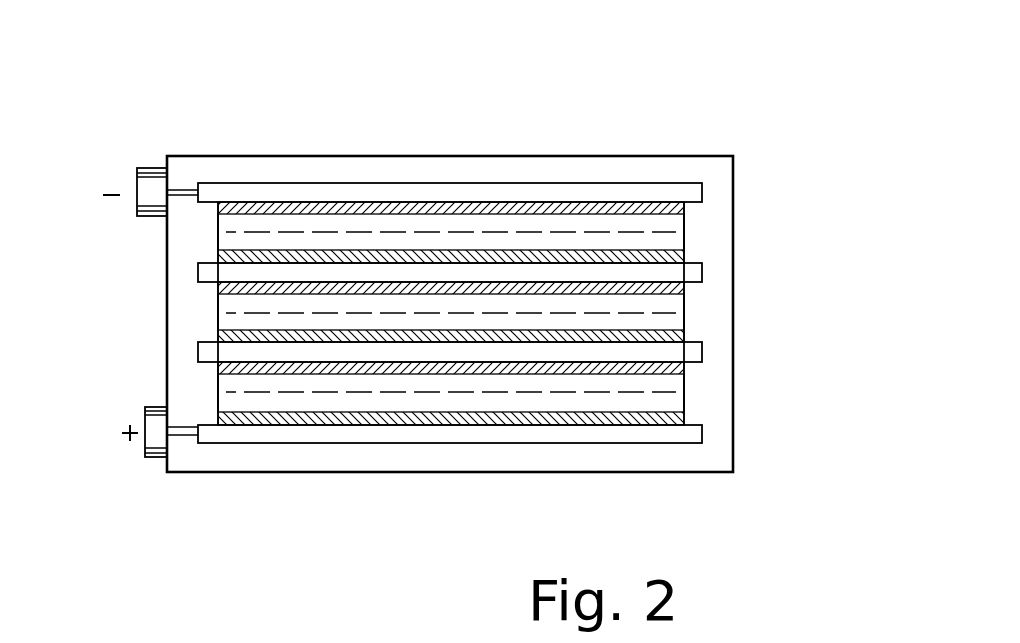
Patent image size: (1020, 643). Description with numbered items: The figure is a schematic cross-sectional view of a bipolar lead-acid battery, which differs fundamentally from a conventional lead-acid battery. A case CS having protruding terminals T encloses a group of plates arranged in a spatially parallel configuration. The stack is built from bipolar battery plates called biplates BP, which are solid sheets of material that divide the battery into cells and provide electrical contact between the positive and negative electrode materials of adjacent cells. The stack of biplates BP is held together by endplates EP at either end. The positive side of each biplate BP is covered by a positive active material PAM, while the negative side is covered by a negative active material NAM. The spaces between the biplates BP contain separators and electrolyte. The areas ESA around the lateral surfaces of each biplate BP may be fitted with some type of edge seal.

The terminal T is at (146, 167).
The positive active material PAM is at (305, 254).
The negative active material NAM is at (378, 201).
The endplate EP is at (509, 184).
The case CS is at (718, 242).
The biplate BP is at (702, 273).
The edge seal area ESA is at (128, 302).